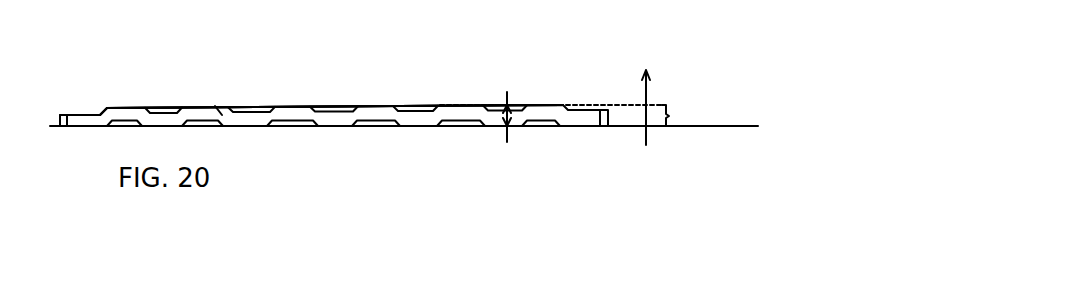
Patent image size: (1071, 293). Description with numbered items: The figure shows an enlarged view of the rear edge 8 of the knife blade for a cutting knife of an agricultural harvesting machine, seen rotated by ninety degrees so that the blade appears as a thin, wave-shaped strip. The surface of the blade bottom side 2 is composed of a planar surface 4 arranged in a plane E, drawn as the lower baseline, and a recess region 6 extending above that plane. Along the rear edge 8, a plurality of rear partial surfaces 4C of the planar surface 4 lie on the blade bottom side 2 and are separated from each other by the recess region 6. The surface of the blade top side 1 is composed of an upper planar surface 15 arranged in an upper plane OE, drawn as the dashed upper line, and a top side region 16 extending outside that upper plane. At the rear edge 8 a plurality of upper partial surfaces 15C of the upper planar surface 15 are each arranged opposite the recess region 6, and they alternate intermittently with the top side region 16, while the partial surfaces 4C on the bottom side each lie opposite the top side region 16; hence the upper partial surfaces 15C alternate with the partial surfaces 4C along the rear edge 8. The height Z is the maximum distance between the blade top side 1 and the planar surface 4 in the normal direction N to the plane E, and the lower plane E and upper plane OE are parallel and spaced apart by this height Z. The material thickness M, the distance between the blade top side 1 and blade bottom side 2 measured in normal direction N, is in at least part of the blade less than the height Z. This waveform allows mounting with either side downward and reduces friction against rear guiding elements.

The blade top side 1 is at (299, 80).
The blade bottom side 2 is at (306, 160).
The planar surface 4 is at (420, 130).
The rear partial surfaces 4C is at (336, 128).
The recess region 6 is at (370, 127).
The rear edge 8 is at (219, 106).
The upper planar surface 15 is at (97, 72).
The upper partial surfaces 15C is at (125, 106).
The top side region 16 is at (86, 112).
The material thickness M is at (501, 107).
The upper plane OE is at (623, 105).
The plane E is at (735, 126).
The normal direction N is at (653, 104).
The height Z is at (675, 115).